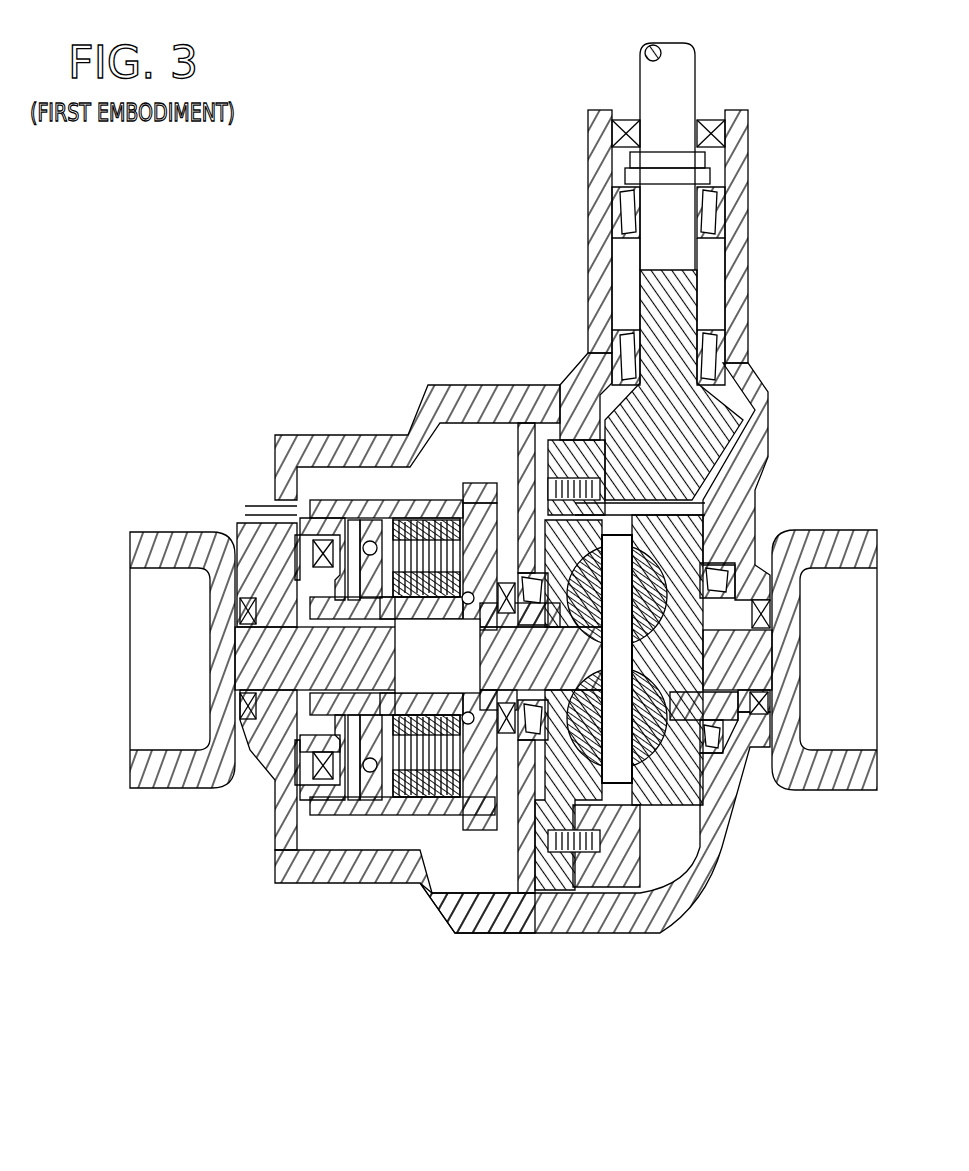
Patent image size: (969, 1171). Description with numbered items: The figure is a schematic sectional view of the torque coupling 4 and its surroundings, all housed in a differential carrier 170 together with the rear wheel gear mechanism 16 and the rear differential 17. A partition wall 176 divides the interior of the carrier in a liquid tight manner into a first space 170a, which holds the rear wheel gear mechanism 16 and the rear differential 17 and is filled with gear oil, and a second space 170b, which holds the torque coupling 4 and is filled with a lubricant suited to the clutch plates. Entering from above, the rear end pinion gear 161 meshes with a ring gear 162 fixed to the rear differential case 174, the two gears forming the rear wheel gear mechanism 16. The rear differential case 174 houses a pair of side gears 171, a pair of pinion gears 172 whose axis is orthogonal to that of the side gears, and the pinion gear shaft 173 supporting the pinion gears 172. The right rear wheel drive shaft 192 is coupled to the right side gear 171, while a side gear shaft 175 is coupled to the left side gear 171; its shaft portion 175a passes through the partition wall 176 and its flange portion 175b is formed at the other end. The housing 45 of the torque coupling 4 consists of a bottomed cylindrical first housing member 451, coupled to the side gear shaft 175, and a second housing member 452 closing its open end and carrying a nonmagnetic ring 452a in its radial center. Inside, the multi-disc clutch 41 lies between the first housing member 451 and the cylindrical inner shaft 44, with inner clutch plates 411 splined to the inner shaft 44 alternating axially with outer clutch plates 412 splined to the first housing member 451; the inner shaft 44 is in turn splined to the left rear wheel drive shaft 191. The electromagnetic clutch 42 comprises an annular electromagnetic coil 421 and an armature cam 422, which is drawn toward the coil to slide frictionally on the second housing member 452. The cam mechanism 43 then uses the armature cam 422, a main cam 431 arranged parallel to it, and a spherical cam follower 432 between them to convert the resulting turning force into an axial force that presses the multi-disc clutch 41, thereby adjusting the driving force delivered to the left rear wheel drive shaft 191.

The torque coupling 4 is at (400, 470).
The rear wheel gear mechanism 16 is at (818, 357).
The rear differential 17 is at (659, 866).
The multi-disc clutch 41 is at (365, 532).
The electromagnetic clutch 42 is at (196, 602).
The cam mechanism 43 is at (357, 755).
The inner shaft 44 is at (385, 540).
The housing 45 is at (466, 470).
The rear end pinion gear 161 is at (700, 447).
The ring gear 162 is at (592, 465).
The differential carrier 170 is at (737, 219).
The first space 170a is at (690, 892).
The second space 170b is at (458, 878).
The side gear 171 is at (660, 585).
The pinion gear 172 is at (647, 560).
The pinion gear shaft 173 is at (663, 820).
The rear differential case 174 is at (712, 753).
The side gear shaft 175 is at (485, 857).
The shaft portion 175a is at (535, 433).
The flange portion 175b is at (460, 486).
The partition wall 176 is at (527, 827).
The left rear wheel drive shaft 191 is at (250, 674).
The right rear wheel drive shaft 192 is at (762, 700).
The inner clutch plate 411 is at (420, 500).
The outer clutch plate 412 is at (397, 495).
The electromagnetic coil 421 is at (318, 548).
The armature cam 422 is at (330, 525).
The main cam 431 is at (395, 818).
The cam follower 432 is at (360, 778).
The first housing member 451 is at (312, 820).
The second housing member 452 is at (312, 793).
The nonmagnetic ring 452a is at (327, 808).